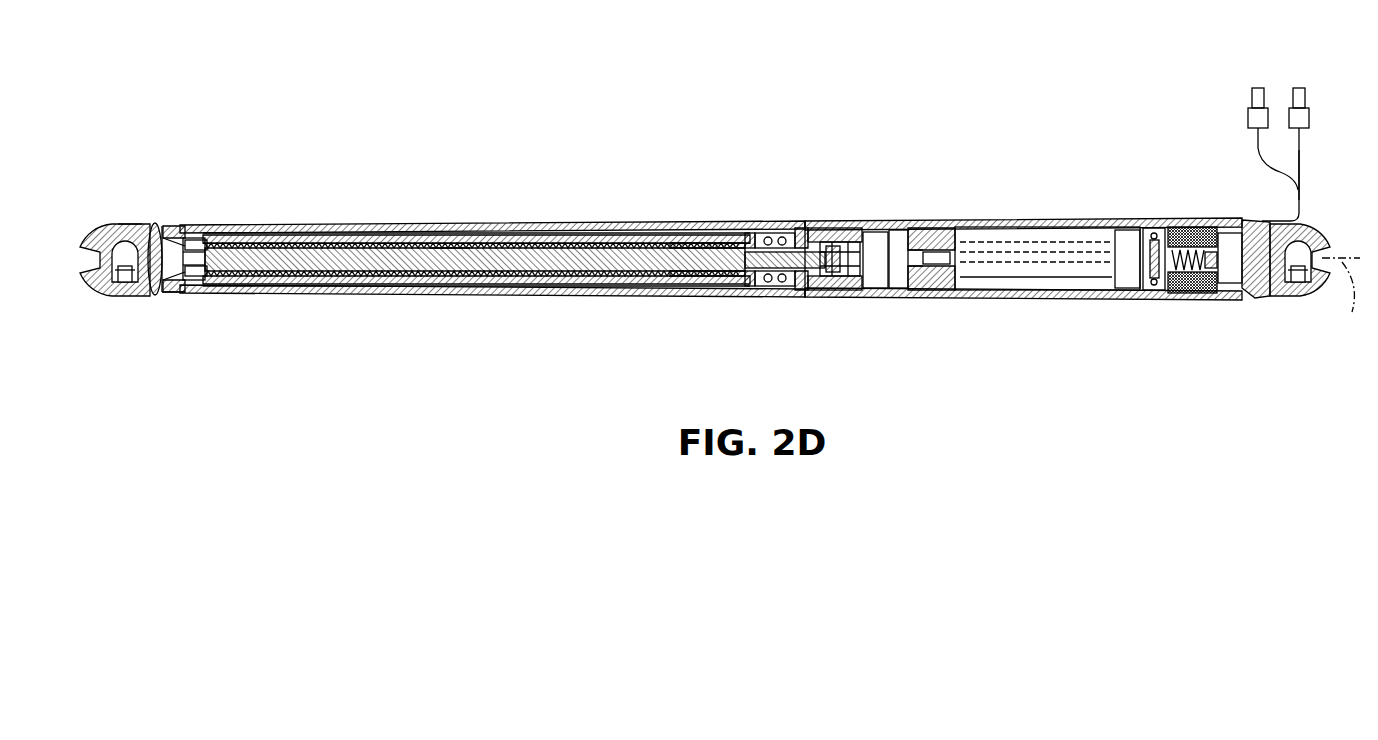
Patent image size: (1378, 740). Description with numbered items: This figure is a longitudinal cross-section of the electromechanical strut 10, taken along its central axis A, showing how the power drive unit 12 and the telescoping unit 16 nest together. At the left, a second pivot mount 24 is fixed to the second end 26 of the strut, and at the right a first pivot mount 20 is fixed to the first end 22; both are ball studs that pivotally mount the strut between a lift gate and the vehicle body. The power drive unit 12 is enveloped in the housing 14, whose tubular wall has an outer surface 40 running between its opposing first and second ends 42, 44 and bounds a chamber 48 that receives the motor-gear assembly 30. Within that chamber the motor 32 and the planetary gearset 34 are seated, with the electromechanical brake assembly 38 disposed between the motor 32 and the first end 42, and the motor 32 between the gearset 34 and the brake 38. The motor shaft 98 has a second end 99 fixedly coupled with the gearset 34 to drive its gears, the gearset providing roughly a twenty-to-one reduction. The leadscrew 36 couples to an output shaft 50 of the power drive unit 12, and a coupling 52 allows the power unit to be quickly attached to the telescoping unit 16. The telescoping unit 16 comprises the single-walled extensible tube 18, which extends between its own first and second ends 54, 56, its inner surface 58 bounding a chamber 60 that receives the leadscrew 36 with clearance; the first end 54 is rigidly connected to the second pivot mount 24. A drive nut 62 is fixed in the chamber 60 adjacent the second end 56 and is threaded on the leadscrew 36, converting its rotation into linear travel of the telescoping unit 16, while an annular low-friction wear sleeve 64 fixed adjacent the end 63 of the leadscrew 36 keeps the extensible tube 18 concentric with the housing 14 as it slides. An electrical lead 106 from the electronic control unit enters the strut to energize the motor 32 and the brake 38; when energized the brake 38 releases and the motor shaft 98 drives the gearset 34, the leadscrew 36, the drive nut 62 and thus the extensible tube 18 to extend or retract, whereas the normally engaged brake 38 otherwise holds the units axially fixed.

The electromechanical strut 10 is at (888, 100).
The power drive unit 12 is at (1105, 190).
The housing 14 is at (716, 222).
The telescoping unit 16 is at (174, 304).
The extensible tube 18 is at (592, 237).
The first pivot mount 20 is at (1318, 290).
The first end 22 is at (1250, 300).
The second pivot mount 24 is at (96, 292).
The second end 26 is at (155, 294).
The motor-gear assembly 30 is at (1021, 249).
The motor 32 is at (1045, 250).
The planetary gearset 34 is at (920, 240).
The leadscrew 36 is at (552, 262).
The electromechanical brake assembly 38 is at (1218, 306).
The outer surface 40 is at (452, 214).
The first end 42 is at (1262, 217).
The second end 44 is at (205, 233).
The chamber 48 is at (757, 283).
The output shaft 50 is at (838, 254).
The coupling 52 is at (865, 308).
The first end 54 is at (152, 222).
The second end 56 is at (760, 233).
The inner surface 58 is at (452, 264).
The chamber 60 is at (225, 278).
The drive nut 62 is at (700, 280).
The end 63 is at (167, 232).
The wear sleeve 64 is at (198, 284).
The motor shaft 98 is at (918, 258).
The second end 99 is at (926, 252).
The electrical lead 106 is at (1300, 190).